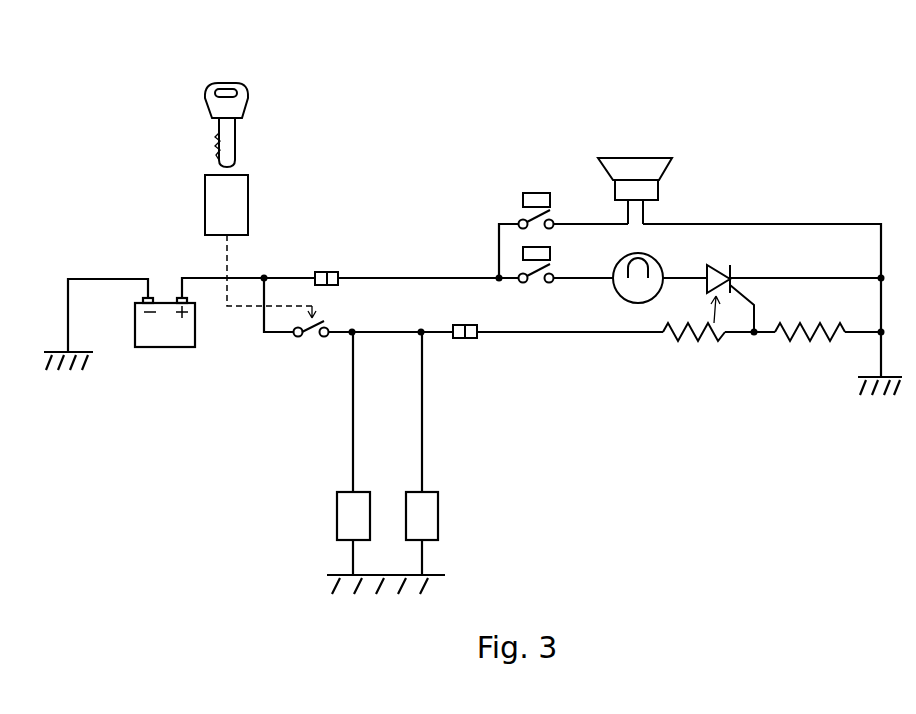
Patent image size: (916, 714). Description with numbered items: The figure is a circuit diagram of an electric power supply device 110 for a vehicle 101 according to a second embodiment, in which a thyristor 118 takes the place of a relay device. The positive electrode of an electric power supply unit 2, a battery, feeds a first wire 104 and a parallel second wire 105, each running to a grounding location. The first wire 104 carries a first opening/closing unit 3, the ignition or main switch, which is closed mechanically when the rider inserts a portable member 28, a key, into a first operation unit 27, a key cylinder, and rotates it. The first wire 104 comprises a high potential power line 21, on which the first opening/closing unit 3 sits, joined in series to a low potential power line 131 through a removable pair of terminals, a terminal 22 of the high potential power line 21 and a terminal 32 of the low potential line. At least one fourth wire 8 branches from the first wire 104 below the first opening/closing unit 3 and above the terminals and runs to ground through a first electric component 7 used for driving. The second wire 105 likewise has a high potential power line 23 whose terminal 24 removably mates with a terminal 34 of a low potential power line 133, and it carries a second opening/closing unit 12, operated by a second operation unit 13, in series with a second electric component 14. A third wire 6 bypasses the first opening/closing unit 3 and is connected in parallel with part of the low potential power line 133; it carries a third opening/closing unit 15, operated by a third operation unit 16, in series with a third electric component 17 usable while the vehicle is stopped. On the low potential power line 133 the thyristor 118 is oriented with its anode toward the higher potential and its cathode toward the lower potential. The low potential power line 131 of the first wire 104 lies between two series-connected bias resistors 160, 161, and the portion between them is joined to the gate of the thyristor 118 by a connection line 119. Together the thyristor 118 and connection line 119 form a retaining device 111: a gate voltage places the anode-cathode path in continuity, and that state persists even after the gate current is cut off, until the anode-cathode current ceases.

The electric power supply unit 2 is at (163, 349).
The first opening/closing unit 3 is at (310, 344).
The third wire 6 is at (862, 224).
The first electric component 7 is at (438, 520).
The fourth wire 8 is at (422, 448).
The second opening/closing unit 12 is at (545, 288).
The second operation unit 13 is at (552, 250).
The second electric component 14 is at (621, 296).
The third opening/closing unit 15 is at (555, 218).
The third operation unit 16 is at (537, 193).
The third electric component 17 is at (630, 157).
The high potential power line 21 is at (440, 336).
The terminal 22 is at (458, 325).
The high potential power line 23 is at (293, 276).
The terminal 24 is at (320, 272).
The first operation unit 27 is at (205, 203).
The portable member 28 is at (205, 88).
The terminal 32 is at (474, 325).
The terminal 34 is at (333, 272).
The vehicle 101 is at (131, 148).
The first wire 104 is at (428, 420).
The second wire 105 is at (277, 160).
The electric power supply device 110 is at (445, 232).
The retaining device 111 is at (792, 418).
The thyristor 118 is at (711, 345).
The connection line 119 is at (755, 338).
The low potential power line 131 is at (490, 336).
The low potential power line 133 is at (375, 276).
The bias resistor 160 is at (676, 342).
The bias resistor 161 is at (818, 342).